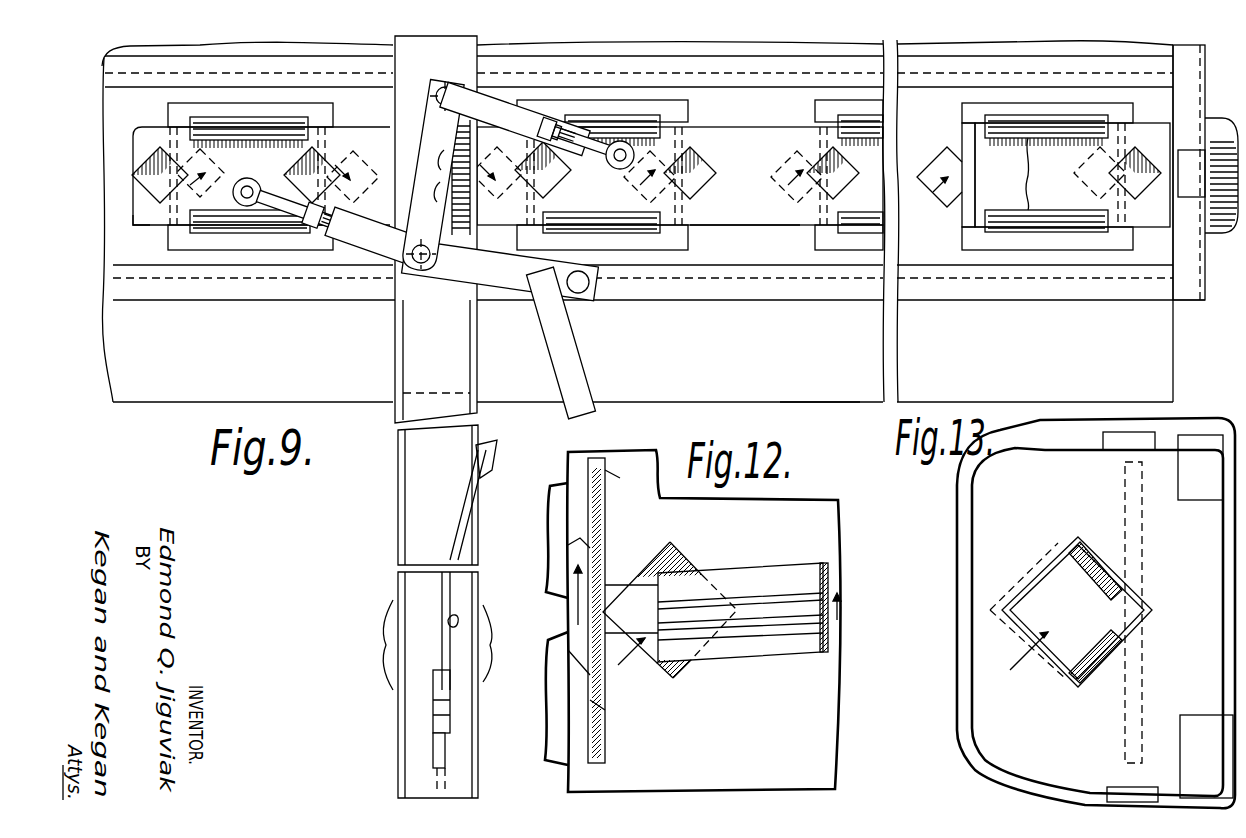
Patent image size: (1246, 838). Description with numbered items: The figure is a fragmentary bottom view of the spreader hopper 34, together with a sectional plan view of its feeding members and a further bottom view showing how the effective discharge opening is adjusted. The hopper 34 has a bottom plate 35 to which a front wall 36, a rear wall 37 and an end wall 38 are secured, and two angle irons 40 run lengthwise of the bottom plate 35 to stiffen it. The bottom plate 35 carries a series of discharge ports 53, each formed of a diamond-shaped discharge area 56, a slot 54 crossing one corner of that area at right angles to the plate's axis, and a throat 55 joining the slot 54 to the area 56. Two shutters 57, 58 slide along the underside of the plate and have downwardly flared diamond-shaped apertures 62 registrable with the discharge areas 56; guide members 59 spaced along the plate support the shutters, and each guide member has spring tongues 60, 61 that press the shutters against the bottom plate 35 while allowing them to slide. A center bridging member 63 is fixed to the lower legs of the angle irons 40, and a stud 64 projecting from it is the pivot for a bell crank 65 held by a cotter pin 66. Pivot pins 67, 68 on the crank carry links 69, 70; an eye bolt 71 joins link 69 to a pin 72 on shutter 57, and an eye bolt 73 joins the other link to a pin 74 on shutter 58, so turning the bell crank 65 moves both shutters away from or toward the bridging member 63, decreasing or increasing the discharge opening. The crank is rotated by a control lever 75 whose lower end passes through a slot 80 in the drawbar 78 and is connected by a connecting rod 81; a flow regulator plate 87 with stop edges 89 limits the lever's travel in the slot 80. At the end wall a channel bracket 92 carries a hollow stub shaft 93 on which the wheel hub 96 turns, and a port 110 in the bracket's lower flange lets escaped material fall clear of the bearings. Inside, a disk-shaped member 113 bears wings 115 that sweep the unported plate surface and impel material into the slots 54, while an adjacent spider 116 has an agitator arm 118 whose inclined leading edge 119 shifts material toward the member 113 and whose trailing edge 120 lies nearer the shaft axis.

In FIG. 9, the hopper 34 is at (150, 357).
In FIG. 12, the hopper 34 is at (820, 740).
In FIG. 13, the hopper 34 is at (968, 770).
In FIG. 9, the bottom plate 35 is at (108, 118).
In FIG. 12, the bottom plate 35 is at (838, 512).
In FIG. 13, the bottom plate 35 is at (963, 578).
In FIG. 9, the front wall 36 is at (805, 390).
In FIG. 9, the rear wall 37 is at (160, 46).
In FIG. 9, the end wall 38 is at (1174, 316).
In FIG. 9, the angle iron 40 is at (260, 288).
In FIG. 9, the discharge port 53 is at (515, 212).
In FIG. 12, the discharge port 53 is at (630, 669).
In FIG. 13, the discharge port 53 is at (1021, 665).
In FIG. 9, the slot 54 is at (1137, 140).
In FIG. 12, the slot 54 is at (598, 460).
In FIG. 13, the slot 54 is at (1140, 533).
In FIG. 9, the throat 55 is at (172, 190).
In FIG. 12, the throat 55 is at (648, 580).
In FIG. 13, the throat 55 is at (1120, 608).
In FIG. 9, the discharge area 56 is at (210, 192).
In FIG. 12, the discharge area 56 is at (682, 565).
In FIG. 13, the discharge area 56 is at (1052, 585).
In FIG. 9, the shutter 57 is at (712, 226).
In FIG. 12, the shutter 57 is at (548, 748).
In FIG. 13, the shutter 57 is at (985, 497).
In FIG. 9, the shutter 58 is at (162, 230).
In FIG. 9, the guide member 59 is at (170, 108).
In FIG. 13, the guide member 59 is at (1105, 440).
In FIG. 9, the spring tongue 60 is at (300, 125).
In FIG. 13, the spring tongue 60 is at (1185, 480).
In FIG. 9, the spring tongue 61 is at (225, 230).
In FIG. 13, the spring tongue 61 is at (1185, 725).
In FIG. 9, the aperture 62 is at (140, 172).
In FIG. 12, the aperture 62 is at (565, 572).
In FIG. 13, the aperture 62 is at (1095, 675).
In FIG. 9, the center bridging member 63 is at (393, 302).
In FIG. 9, the stud 64 is at (446, 190).
In FIG. 9, the bell crank 65 is at (518, 292).
In FIG. 9, the cotter pin 66 is at (432, 176).
In FIG. 9, the pivot pin 67 is at (445, 85).
In FIG. 9, the pivot pin 68 is at (422, 266).
In FIG. 9, the link 69 is at (495, 100).
In FIG. 9, the link 70 is at (360, 250).
In FIG. 9, the eye bolt 71 is at (598, 125).
In FIG. 9, the pin 72 is at (615, 168).
In FIG. 9, the eye bolt 73 is at (259, 188).
In FIG. 9, the pin 74 is at (275, 226).
In FIG. 9, the control lever 75 is at (432, 752).
In FIG. 9, the drawbar 78 is at (470, 342).
In FIG. 9, the slot 80 is at (445, 655).
In FIG. 9, the connecting rod 81 is at (575, 340).
In FIG. 9, the flow regulator plate 87 is at (384, 645).
In FIG. 9, the stop edge 89 is at (386, 648).
In FIG. 9, the channel bracket 92 is at (1195, 60).
In FIG. 9, the hollow stub shaft 93 is at (1200, 228).
In FIG. 9, the hub 96 is at (1215, 140).
In FIG. 9, the port 110 is at (1190, 198).
In FIG. 12, the disk-shaped member 113 is at (605, 735).
In FIG. 12, the wing 115 is at (608, 490).
In FIG. 12, the spider 116 is at (835, 565).
In FIG. 12, the agitator arm 118 is at (765, 668).
In FIG. 12, the leading edge surface 119 is at (760, 572).
In FIG. 12, the trailing edge 120 is at (718, 665).